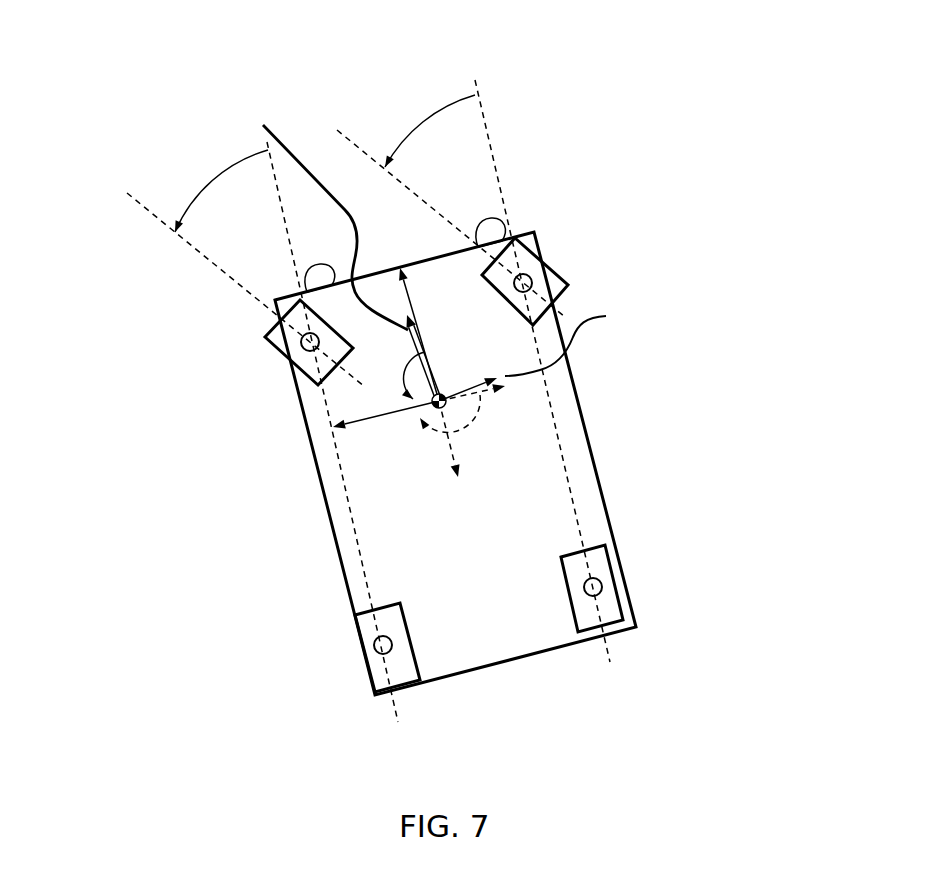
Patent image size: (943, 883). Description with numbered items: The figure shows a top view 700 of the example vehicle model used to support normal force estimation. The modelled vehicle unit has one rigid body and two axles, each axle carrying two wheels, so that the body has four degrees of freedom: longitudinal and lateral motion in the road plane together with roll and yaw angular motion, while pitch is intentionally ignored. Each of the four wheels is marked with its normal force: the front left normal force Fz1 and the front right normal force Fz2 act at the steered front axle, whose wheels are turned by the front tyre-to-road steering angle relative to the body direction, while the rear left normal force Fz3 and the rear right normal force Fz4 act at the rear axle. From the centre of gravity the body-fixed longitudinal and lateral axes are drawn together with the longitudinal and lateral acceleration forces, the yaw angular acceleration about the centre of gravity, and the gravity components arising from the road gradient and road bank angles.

The vehicle dynamics diagram 700 is at (80, 58).
The front left normal force Fz1 is at (319, 342).
The front right normal force Fz2 is at (532, 281).
The rear left normal force Fz3 is at (392, 643).
The rear right normal force Fz4 is at (584, 588).